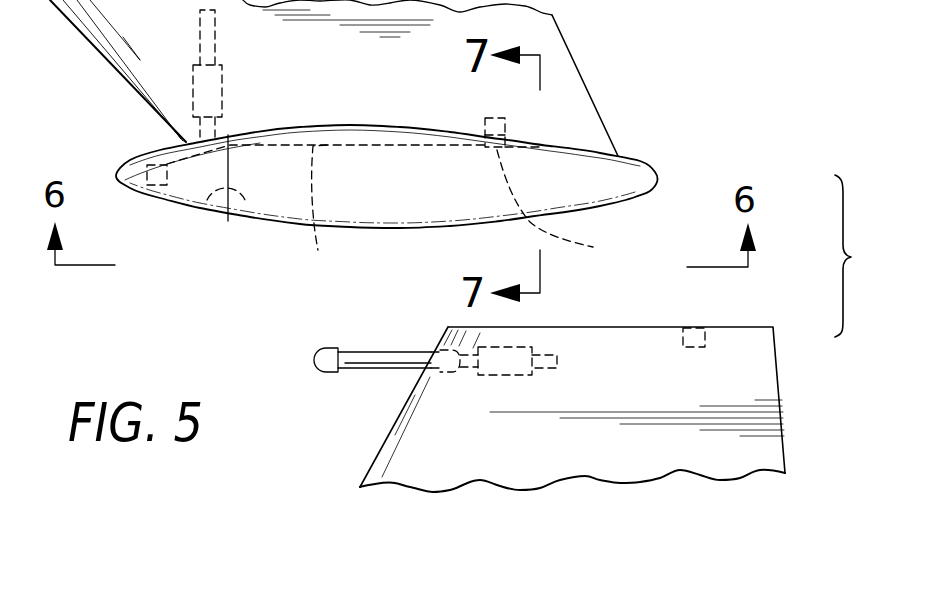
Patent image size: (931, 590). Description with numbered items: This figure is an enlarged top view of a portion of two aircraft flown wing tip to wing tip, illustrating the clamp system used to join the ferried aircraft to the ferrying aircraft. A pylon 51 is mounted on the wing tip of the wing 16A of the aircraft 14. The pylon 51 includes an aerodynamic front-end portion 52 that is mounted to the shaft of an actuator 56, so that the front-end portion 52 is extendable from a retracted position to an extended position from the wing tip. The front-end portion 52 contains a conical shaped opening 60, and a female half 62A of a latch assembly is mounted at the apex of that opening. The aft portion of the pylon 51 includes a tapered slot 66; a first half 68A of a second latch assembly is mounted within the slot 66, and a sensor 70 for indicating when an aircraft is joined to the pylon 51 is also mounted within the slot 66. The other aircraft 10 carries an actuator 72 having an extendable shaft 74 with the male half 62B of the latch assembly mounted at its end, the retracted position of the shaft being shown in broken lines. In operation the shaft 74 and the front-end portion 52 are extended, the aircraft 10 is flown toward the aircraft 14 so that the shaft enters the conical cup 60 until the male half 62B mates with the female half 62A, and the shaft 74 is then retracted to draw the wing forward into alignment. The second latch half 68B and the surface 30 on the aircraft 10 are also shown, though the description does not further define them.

The aircraft 10 is at (792, 397).
The aircraft 14 is at (585, 42).
The wing 16A is at (584, 81).
The plate side surface 30 is at (786, 458).
The pylon 51 is at (379, 232).
The aerodynamic front-end portion 52 is at (132, 157).
The actuator 56 is at (190, 87).
The conical shaped opening 60 is at (243, 207).
The female half of latch assembly 62A is at (156, 185).
The male half of latch assembly 62B is at (313, 360).
The tapered slot 66 is at (317, 213).
The first half of second latch assembly 68A is at (575, 206).
The connector socket 68B is at (695, 323).
The sensor 70 is at (505, 122).
The actuator 72 is at (500, 346).
The extendable shaft 74 is at (368, 352).